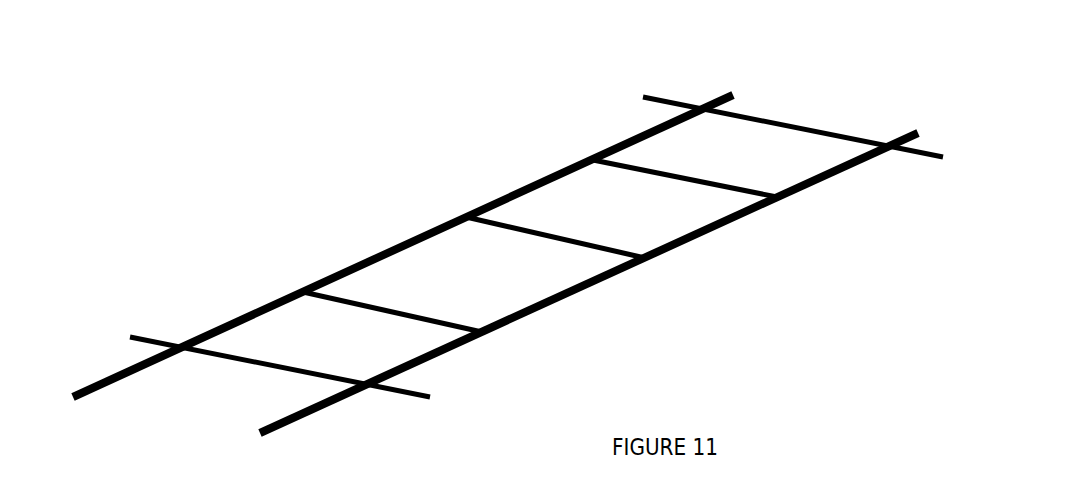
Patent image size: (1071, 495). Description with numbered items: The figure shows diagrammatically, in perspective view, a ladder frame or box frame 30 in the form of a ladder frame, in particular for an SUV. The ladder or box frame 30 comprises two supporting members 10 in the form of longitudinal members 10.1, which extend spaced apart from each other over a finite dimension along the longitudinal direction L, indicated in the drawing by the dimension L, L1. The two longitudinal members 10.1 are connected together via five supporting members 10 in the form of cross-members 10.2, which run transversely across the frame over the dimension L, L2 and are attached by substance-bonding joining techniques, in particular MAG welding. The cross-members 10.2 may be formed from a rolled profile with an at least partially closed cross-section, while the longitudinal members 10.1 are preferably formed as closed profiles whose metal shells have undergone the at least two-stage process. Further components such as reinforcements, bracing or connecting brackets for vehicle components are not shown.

The ladder frame or box frame 30 is at (362, 228).
The supporting member 10 is at (508, 264).
The longitudinal member 10.1 is at (548, 170).
The cross-member 10.2 is at (385, 312).
The longitudinal direction L is at (502, 156).
The length of longitudinal elements L1 is at (58, 278).
The length of transverse elements L2 is at (946, 103).